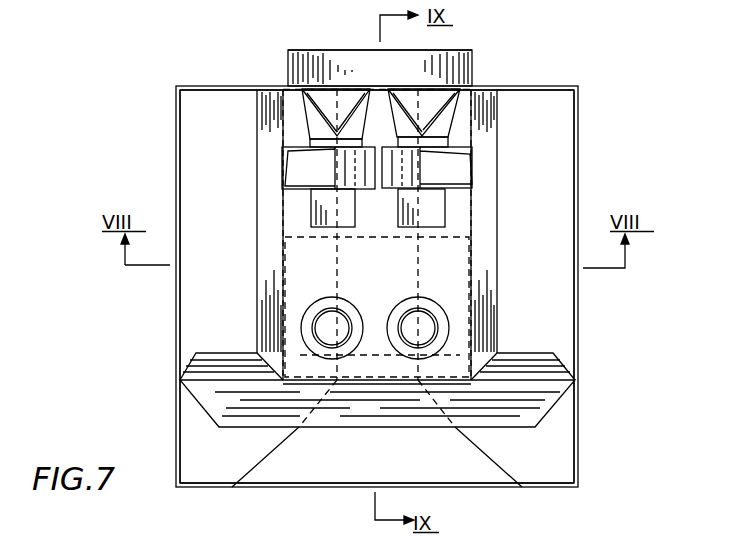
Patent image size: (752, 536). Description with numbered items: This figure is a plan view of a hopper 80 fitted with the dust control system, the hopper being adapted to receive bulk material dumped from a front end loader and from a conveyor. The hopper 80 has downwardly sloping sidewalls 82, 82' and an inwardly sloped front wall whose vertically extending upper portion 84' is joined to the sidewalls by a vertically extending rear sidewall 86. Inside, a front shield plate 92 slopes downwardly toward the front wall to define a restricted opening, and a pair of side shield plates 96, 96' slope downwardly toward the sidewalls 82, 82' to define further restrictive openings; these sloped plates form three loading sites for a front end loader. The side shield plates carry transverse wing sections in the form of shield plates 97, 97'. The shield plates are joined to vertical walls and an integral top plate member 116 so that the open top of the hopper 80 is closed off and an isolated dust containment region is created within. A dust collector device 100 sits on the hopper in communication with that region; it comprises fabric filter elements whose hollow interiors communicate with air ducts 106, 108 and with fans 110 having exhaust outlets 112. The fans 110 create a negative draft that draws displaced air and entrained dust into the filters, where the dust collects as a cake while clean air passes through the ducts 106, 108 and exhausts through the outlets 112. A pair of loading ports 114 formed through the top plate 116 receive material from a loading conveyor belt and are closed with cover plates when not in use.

The hopper 80 is at (580, 138).
The sidewall 82 is at (609, 286).
The sidewall 82' is at (140, 286).
The upper portion of front wall 84' is at (377, 509).
The rear sidewall 86 is at (201, 86).
The front shield plate 92 is at (343, 427).
The side shield plate 96 is at (516, 235).
The side shield plate 96' is at (239, 235).
The shield plate 97 is at (523, 343).
The shield plate 97' is at (231, 338).
The dust collector device 100 is at (474, 70).
The air duct 106 is at (314, 50).
The air duct 108 is at (310, 122).
The fan 110 is at (312, 215).
The exhaust outlet 112 is at (472, 160).
The loading port 114 is at (403, 318).
The top plate member 116 is at (452, 265).